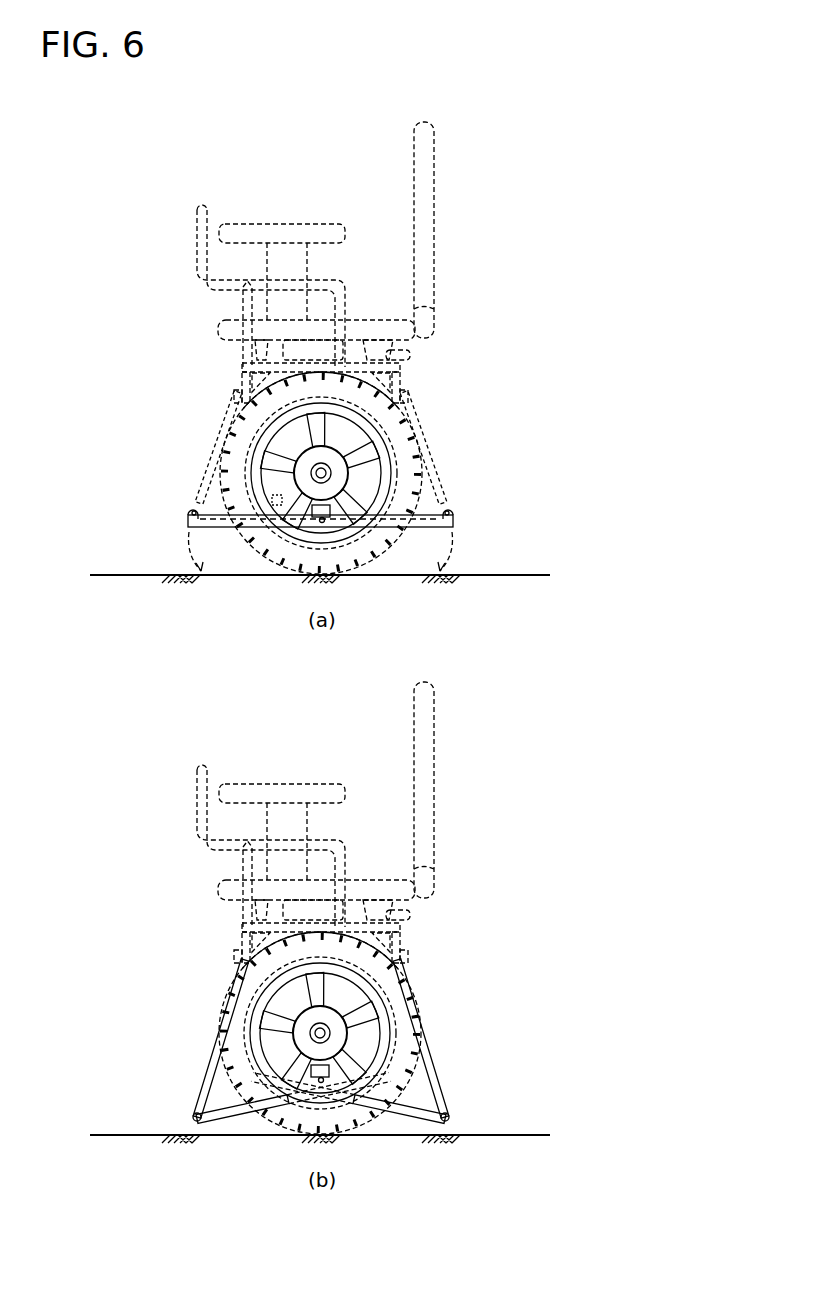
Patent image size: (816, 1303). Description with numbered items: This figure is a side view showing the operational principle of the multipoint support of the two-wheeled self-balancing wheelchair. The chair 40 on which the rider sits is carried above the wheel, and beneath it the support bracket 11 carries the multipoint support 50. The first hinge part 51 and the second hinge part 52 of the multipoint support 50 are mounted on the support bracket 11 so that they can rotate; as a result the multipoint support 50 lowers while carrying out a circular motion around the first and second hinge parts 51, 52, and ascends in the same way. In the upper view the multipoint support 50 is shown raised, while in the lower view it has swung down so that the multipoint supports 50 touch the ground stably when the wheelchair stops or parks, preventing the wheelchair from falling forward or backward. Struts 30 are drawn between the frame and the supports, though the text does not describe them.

The support bracket 11 is at (352, 570).
The support strut 30 is at (212, 478).
The chair 40 is at (431, 208).
The multipoint support 50 is at (188, 522).
The first hinge part 51 is at (300, 540).
The second hinge part 52 is at (298, 789).